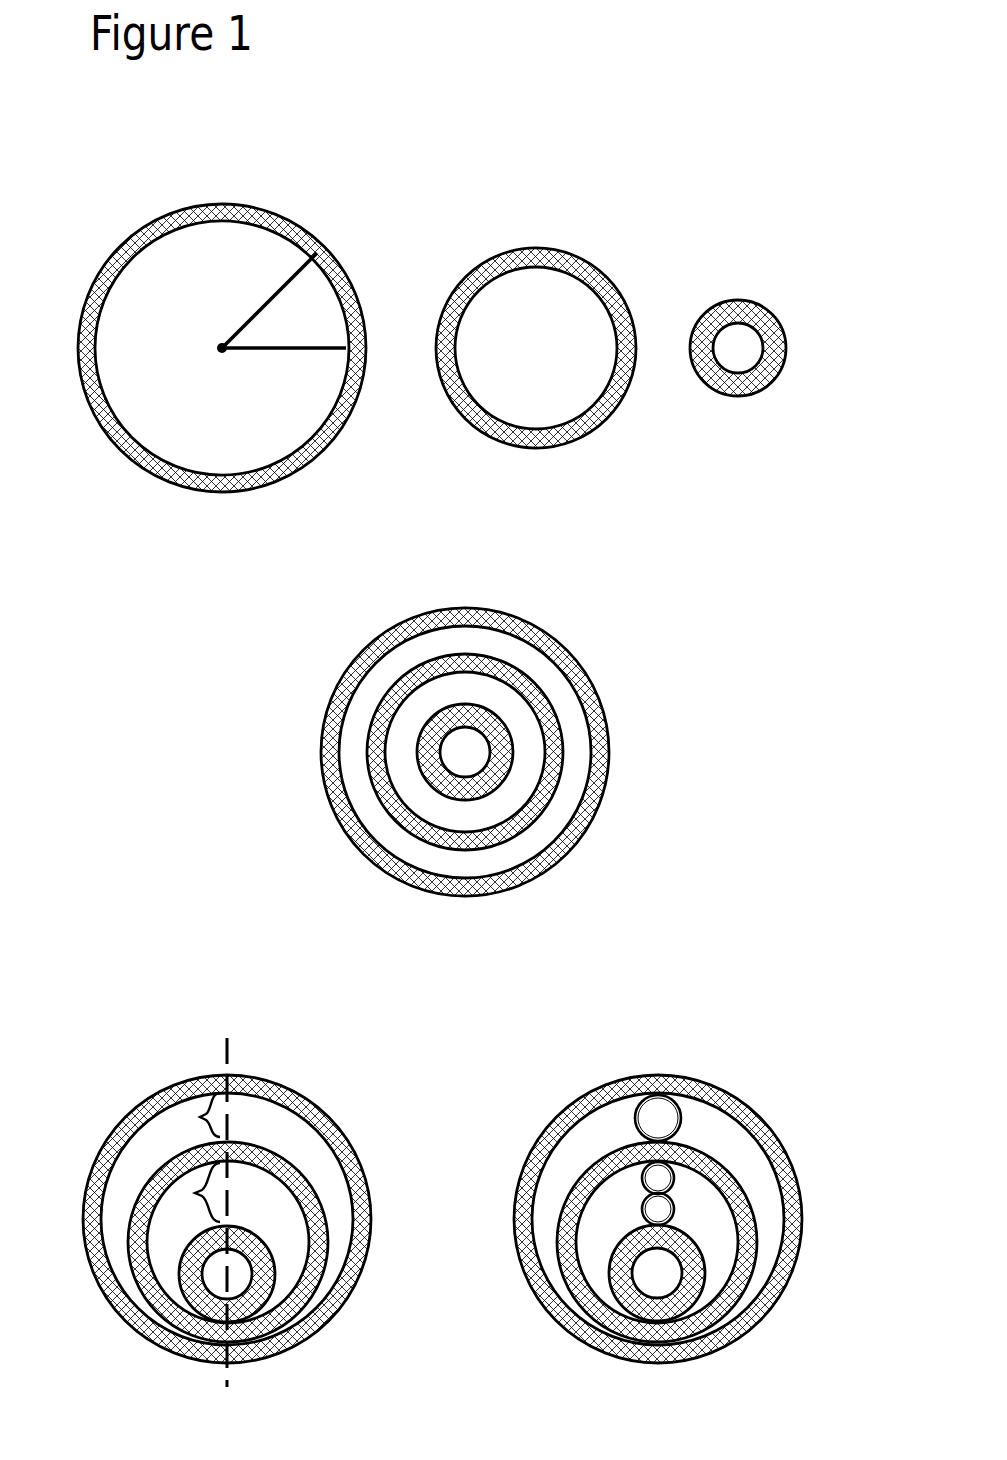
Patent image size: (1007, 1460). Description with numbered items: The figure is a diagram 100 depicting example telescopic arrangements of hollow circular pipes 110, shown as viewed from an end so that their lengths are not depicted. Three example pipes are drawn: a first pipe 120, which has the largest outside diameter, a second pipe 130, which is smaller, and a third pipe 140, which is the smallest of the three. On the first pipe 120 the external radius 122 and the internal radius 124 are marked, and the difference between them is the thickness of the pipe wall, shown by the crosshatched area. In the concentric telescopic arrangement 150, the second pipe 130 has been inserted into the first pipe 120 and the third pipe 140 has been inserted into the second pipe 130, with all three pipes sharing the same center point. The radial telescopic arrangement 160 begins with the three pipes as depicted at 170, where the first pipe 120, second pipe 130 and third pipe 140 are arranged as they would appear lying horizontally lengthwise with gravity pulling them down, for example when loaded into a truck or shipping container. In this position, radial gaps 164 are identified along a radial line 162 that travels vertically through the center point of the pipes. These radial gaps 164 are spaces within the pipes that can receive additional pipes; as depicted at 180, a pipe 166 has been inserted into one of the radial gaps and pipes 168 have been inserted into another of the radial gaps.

The pipe arrangement overview 100 is at (786, 78).
The hollow circular pipes 110 is at (317, 131).
The first pipe 120 is at (155, 218).
The external radius 122 is at (279, 288).
The internal radius 124 is at (292, 350).
The second pipe 130 is at (548, 248).
The third pipe 140 is at (737, 302).
The concentric telescopic arrangement 150 is at (483, 572).
The radial telescopic arrangement 160 is at (458, 969).
The radial line 162 is at (224, 1053).
The radial gaps 164 is at (195, 1193).
The pipe 166 is at (634, 1113).
The pipes 168 is at (645, 1192).
The three example hollow circular pipes arranged as lying horizontally 170 is at (322, 1019).
The radial telescopic arrangement with inserted pipes 180 is at (747, 1019).